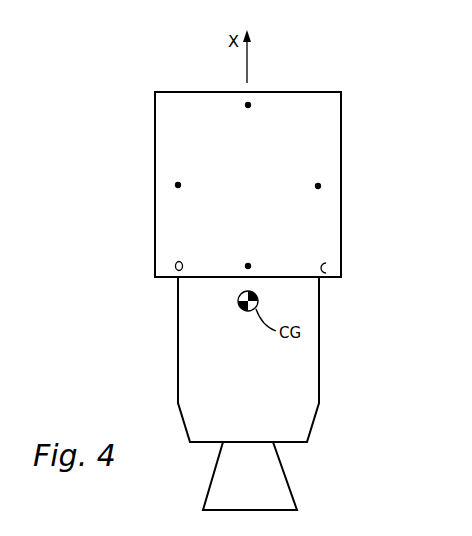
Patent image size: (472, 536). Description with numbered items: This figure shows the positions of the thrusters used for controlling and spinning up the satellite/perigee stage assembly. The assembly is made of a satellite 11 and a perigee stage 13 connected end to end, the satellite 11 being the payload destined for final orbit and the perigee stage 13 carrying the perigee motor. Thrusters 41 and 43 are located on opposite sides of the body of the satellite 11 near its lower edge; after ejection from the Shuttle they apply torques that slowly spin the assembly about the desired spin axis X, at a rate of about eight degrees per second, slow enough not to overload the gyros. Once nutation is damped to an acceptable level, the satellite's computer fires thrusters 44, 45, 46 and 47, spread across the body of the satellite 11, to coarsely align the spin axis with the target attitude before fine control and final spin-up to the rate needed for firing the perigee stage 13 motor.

The satellite 11 is at (335, 122).
The perigee stage 13 is at (313, 370).
The thruster 41 is at (176, 264).
The thruster 43 is at (330, 262).
The thruster 44 is at (176, 183).
The thruster 45 is at (246, 104).
The thruster 46 is at (320, 185).
The thruster 47 is at (247, 264).